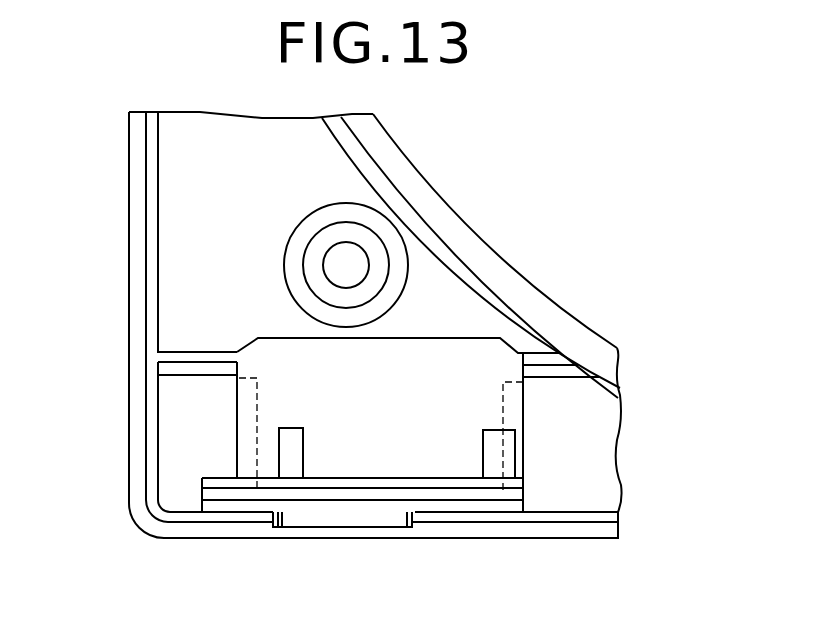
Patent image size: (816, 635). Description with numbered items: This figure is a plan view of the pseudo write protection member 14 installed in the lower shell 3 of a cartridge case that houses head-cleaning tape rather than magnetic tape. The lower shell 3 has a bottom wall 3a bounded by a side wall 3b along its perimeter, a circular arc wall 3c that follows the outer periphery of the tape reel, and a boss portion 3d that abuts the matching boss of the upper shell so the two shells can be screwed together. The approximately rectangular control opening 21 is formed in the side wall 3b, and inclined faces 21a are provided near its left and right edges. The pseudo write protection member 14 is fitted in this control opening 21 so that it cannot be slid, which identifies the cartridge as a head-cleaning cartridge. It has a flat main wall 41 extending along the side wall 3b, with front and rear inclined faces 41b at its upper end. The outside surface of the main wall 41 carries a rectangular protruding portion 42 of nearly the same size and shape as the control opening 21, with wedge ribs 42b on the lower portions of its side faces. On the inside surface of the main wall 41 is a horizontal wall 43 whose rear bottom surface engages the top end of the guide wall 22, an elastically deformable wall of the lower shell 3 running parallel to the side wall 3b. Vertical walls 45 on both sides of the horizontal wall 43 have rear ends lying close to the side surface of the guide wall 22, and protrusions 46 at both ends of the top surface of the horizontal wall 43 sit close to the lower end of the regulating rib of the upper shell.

The lower shell 3 is at (131, 264).
The bottom wall 3a is at (613, 460).
The side wall 3b is at (138, 404).
The circular arc wall 3c is at (490, 254).
The boss portion 3d is at (318, 245).
The pseudo write protection member 14 is at (372, 528).
The control opening 21 is at (408, 532).
The inclined face 21a is at (274, 521).
The guide wall 22 is at (203, 352).
The main wall 41 is at (355, 482).
The inclined face 41b is at (203, 482).
The protruding portion 42 is at (322, 516).
The wedge rib 42b is at (422, 498).
The horizontal wall 43 is at (410, 345).
The vertical wall 45 is at (245, 430).
The protrusion 46 is at (292, 435).